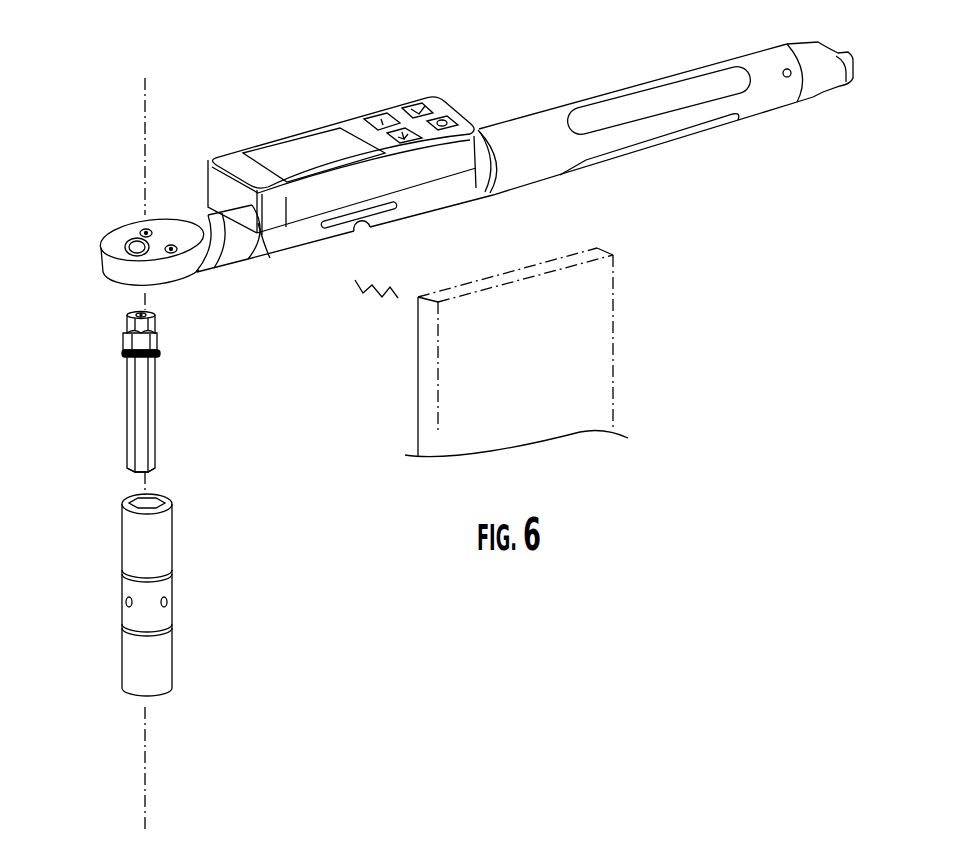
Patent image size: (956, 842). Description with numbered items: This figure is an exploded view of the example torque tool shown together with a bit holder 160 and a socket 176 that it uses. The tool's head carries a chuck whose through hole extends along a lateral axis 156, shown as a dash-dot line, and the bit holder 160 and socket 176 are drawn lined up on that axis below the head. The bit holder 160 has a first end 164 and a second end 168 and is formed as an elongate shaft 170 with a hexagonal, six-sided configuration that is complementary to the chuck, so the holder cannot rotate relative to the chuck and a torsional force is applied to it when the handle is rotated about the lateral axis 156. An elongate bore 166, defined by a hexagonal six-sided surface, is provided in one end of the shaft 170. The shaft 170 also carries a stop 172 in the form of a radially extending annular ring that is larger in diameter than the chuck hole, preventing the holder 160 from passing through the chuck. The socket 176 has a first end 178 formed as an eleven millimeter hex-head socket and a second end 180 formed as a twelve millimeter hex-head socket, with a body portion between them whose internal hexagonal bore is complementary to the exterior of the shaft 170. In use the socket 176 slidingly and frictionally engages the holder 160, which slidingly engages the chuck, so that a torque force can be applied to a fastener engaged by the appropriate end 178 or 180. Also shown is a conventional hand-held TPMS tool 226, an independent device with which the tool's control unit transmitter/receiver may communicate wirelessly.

The lateral axis 156 is at (149, 101).
The bit holder 160 is at (192, 397).
The first end 164 is at (152, 321).
The bore 166 is at (126, 313).
The second end 168 is at (131, 470).
The shaft 170 is at (156, 442).
The stop 172 is at (160, 352).
The socket 176 is at (110, 598).
The first end 178 is at (120, 542).
The second end 180 is at (120, 660).
The hand-held TPMS tool 226 is at (541, 361).